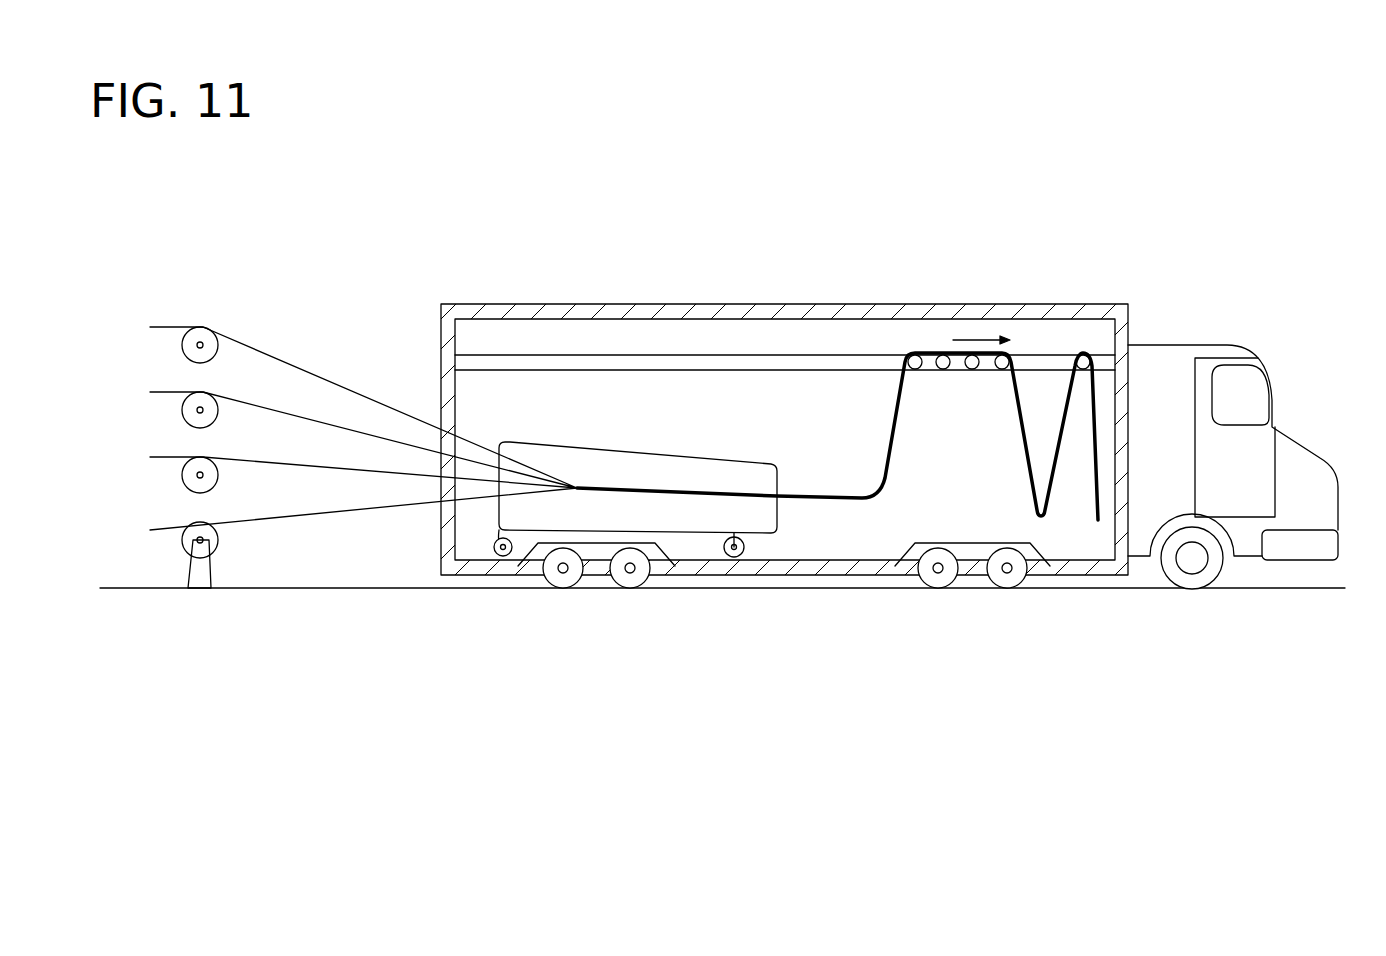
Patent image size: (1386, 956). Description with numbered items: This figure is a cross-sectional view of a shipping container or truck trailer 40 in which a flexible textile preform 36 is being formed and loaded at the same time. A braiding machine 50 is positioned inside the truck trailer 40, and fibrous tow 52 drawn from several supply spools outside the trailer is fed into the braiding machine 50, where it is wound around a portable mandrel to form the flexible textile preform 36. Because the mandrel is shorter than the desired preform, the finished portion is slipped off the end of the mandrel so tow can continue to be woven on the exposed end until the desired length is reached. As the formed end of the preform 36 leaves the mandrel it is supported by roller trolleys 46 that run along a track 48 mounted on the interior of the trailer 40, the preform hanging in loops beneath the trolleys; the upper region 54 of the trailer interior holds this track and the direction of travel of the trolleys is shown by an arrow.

The flexible textile preform 36 is at (1100, 504).
The shipping container or truck trailer 40 is at (1002, 280).
The roller trolleys 46 is at (1090, 358).
The rail 48 is at (812, 362).
The braiding machine 50 is at (687, 518).
The fibrous tow 52 is at (323, 468).
The processing zone 54 is at (507, 322).